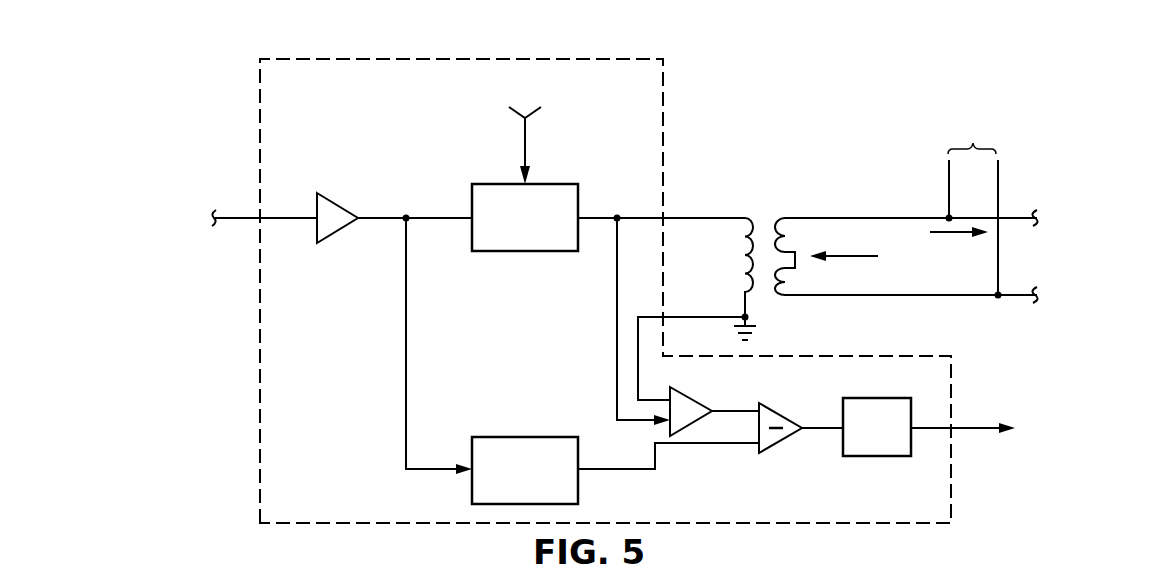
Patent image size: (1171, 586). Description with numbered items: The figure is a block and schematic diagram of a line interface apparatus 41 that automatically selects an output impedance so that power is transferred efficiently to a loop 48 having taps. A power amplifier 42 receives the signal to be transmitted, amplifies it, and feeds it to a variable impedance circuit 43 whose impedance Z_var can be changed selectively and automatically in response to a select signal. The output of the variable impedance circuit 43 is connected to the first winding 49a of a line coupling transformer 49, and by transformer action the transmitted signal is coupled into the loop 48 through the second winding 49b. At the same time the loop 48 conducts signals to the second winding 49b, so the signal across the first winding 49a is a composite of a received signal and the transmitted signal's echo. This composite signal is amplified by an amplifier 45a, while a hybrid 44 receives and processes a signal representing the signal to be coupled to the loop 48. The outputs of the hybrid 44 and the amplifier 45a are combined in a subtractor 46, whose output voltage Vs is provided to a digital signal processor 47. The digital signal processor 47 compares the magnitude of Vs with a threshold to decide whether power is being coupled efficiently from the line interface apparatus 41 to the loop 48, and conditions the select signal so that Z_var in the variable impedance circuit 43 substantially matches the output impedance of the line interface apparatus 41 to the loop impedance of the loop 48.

The line interface apparatus 41 is at (486, 59).
The power amplifier 42 is at (336, 238).
The variable impedance circuit 43 is at (488, 252).
The hybrid 44 is at (515, 437).
The amplifier 45a is at (685, 393).
The subtractor 46 is at (775, 409).
The digital signal processor 47 is at (862, 457).
The loop 48 is at (955, 209).
The line coupling transformer 49 is at (765, 227).
The first winding 49a is at (746, 209).
The second winding 49b is at (763, 200).